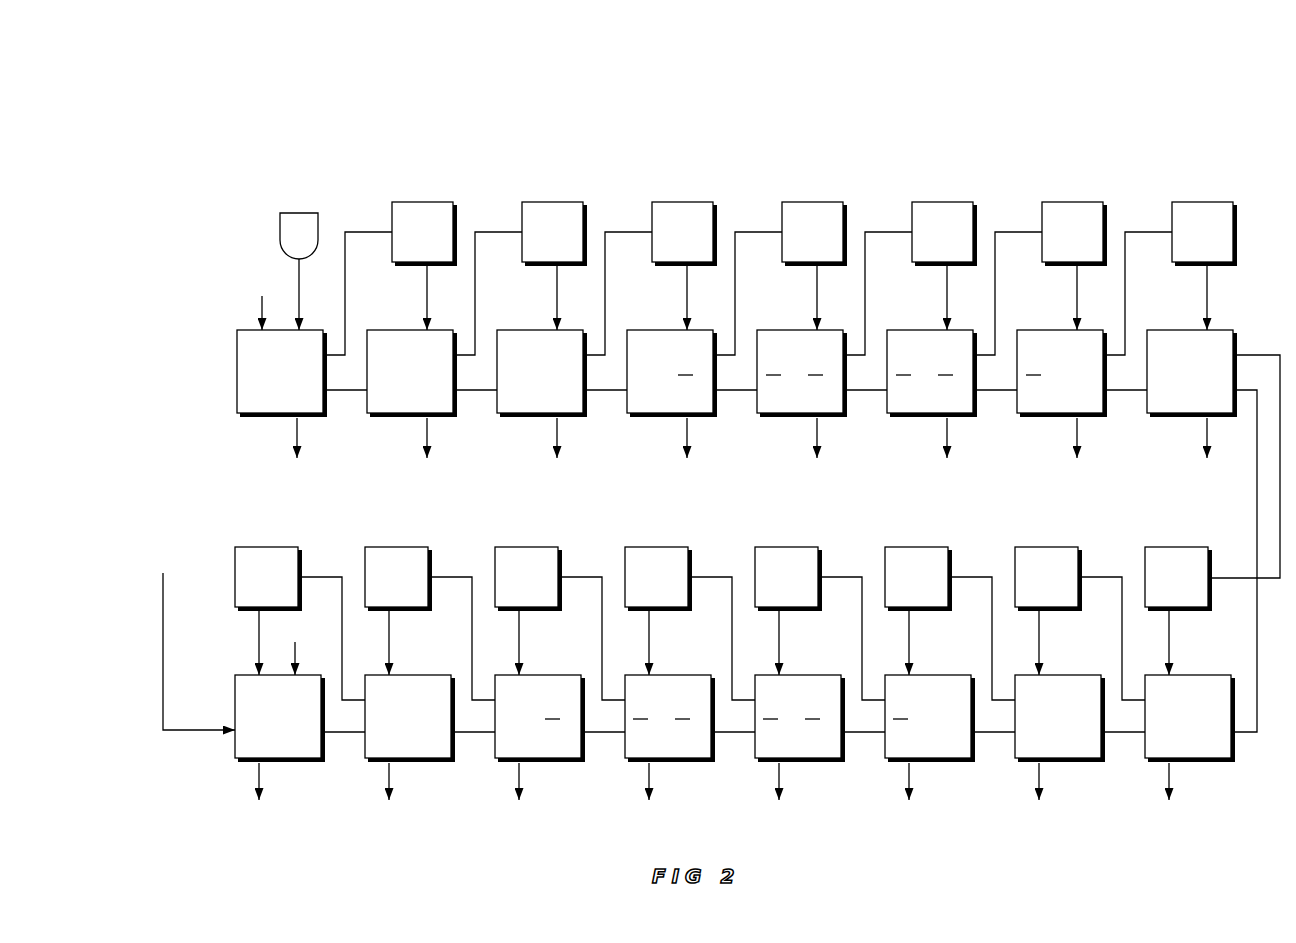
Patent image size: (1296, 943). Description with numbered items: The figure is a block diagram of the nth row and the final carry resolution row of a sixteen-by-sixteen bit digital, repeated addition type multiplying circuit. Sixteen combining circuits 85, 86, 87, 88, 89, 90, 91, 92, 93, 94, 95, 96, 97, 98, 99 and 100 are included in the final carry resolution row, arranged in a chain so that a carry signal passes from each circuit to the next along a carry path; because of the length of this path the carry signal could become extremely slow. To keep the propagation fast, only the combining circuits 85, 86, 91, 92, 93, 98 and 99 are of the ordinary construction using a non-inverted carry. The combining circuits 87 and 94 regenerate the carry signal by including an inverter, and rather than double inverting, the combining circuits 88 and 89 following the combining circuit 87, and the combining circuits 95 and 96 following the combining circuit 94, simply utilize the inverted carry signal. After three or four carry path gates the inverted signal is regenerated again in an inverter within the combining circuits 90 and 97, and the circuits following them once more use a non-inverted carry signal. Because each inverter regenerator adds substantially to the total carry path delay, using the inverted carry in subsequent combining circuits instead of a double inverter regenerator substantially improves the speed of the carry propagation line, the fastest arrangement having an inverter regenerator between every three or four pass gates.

The combining circuit 85 is at (320, 759).
The combining circuit 86 is at (450, 759).
The combining circuit 87 is at (580, 759).
The combining circuit 88 is at (710, 759).
The combining circuit 89 is at (840, 759).
The combining circuit 90 is at (970, 759).
The combining circuit 91 is at (1100, 759).
The combining circuit 92 is at (1230, 759).
The combining circuit 93 is at (1145, 409).
The combining circuit 94 is at (1015, 409).
The combining circuit 95 is at (885, 409).
The combining circuit 96 is at (755, 409).
The combining circuit 97 is at (625, 409).
The combining circuit 98 is at (495, 409).
The combining circuit 99 is at (365, 409).
The combining circuit 100 is at (235, 409).